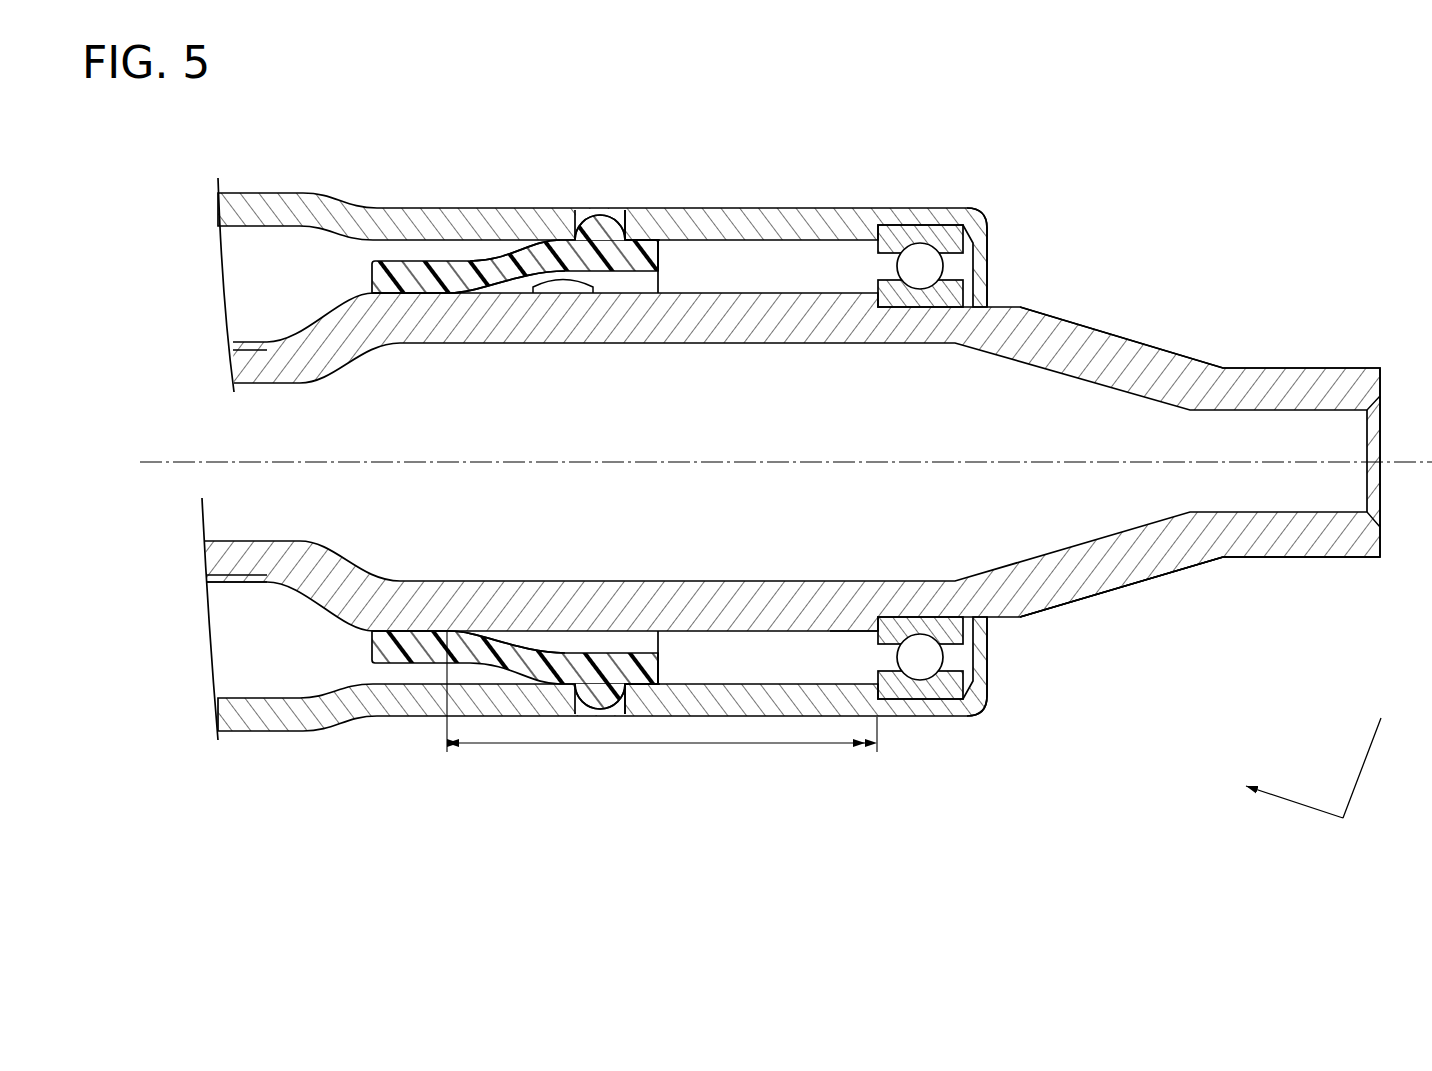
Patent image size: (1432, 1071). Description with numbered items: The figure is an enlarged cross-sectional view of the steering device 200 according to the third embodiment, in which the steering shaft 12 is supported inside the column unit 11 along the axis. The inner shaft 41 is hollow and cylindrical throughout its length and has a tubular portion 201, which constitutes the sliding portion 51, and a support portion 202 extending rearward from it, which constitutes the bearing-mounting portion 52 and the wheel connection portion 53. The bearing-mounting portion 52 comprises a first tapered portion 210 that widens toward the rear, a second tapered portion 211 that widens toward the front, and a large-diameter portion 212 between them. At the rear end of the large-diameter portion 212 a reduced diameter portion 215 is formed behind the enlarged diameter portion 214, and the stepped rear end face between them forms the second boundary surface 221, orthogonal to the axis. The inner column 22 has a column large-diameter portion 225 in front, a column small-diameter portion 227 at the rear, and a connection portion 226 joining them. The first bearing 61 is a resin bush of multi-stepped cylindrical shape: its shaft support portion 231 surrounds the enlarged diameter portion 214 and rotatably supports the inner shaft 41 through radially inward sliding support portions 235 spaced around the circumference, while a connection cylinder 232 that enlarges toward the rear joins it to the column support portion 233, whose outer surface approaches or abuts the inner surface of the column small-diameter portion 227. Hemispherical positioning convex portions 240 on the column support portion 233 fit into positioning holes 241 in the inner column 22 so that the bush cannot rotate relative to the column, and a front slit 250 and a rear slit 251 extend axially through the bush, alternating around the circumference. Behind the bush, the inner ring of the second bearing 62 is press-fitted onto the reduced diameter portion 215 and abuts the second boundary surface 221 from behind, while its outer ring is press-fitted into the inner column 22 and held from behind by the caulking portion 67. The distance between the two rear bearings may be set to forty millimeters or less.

The steering device 200 is at (997, 152).
The inner column 22 is at (252, 186).
The column unit 11 is at (648, 480).
The column large-diameter portion 225 is at (602, 723).
The connection portion 226 is at (602, 716).
The column small-diameter portion 227 is at (498, 712).
The caulking portion 67 is at (988, 221).
The first bearing 61 is at (634, 231).
The first tapered portion 210 is at (333, 590).
The second tapered portion 211 is at (1108, 343).
The steering shaft 12 is at (237, 584).
The inner shaft 41 is at (242, 590).
The sliding portion 51 is at (203, 642).
The tubular portion 201 is at (230, 577).
The bearing-mounting portion 52 is at (850, 636).
The wheel connection portion 53 is at (1295, 559).
The support portion 202 is at (1113, 833).
The large-diameter portion 212 is at (952, 119).
The enlarged diameter portion 214 is at (773, 300).
The reduced diameter portion 215 is at (915, 451).
The second boundary surface 221 is at (892, 250).
The second bearing 62 is at (920, 692).
The shaft support portion 231 is at (413, 270).
The connection cylinder 232 is at (530, 250).
The column support portion 233 is at (582, 236).
The sliding support portions 235 is at (427, 290).
The rear slit 251 is at (443, 656).
The positioning convex portions 240 is at (622, 218).
The positioning holes 241 is at (603, 226).
The front slit 250 is at (562, 292).